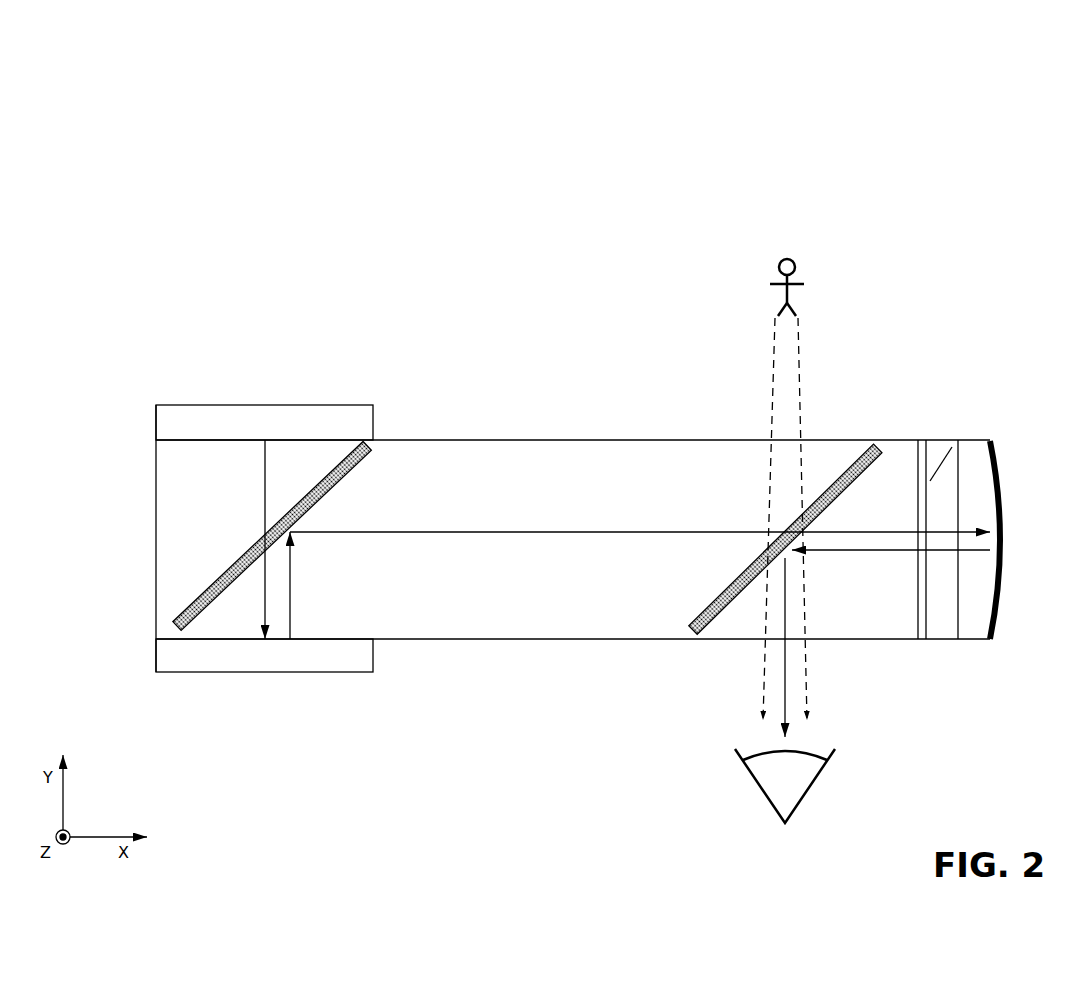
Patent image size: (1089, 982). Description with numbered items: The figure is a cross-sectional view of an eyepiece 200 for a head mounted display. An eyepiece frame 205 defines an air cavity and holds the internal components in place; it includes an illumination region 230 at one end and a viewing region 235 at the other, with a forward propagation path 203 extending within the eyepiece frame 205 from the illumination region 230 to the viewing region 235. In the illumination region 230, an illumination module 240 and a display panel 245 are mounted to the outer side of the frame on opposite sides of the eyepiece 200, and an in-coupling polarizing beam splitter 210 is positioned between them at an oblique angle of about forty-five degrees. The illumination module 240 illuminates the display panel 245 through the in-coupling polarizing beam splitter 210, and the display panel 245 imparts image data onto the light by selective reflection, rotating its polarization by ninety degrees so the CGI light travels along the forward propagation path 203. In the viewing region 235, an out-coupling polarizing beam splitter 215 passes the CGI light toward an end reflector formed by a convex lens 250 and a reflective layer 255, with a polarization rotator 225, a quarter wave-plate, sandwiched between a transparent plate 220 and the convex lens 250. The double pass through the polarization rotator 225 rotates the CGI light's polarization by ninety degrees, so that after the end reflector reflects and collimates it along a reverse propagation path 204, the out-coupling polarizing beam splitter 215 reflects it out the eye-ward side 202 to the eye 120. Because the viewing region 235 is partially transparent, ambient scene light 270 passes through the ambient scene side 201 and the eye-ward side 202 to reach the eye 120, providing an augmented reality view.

The eyepiece 200 is at (168, 117).
The ambient scene side 201 is at (575, 343).
The eye-ward side 202 is at (561, 732).
The forward propagation path 203 is at (508, 532).
The reverse propagation path 204 is at (910, 550).
The eyepiece frame 205 is at (487, 440).
The in-coupling polarizing beam splitter 210 is at (358, 463).
The out-coupling polarizing beam splitter 215 is at (707, 608).
The transparent plate 220 is at (918, 440).
The polarization rotator 225 is at (943, 639).
The illumination region 230 is at (383, 323).
The viewing region 235 is at (888, 240).
The illumination module 240 is at (264, 422).
The display panel 245 is at (264, 655).
The convex lens 250 is at (975, 440).
The reflective layer 255 is at (1002, 517).
The ambient scene light 270 is at (798, 357).
The eye 120 is at (785, 786).